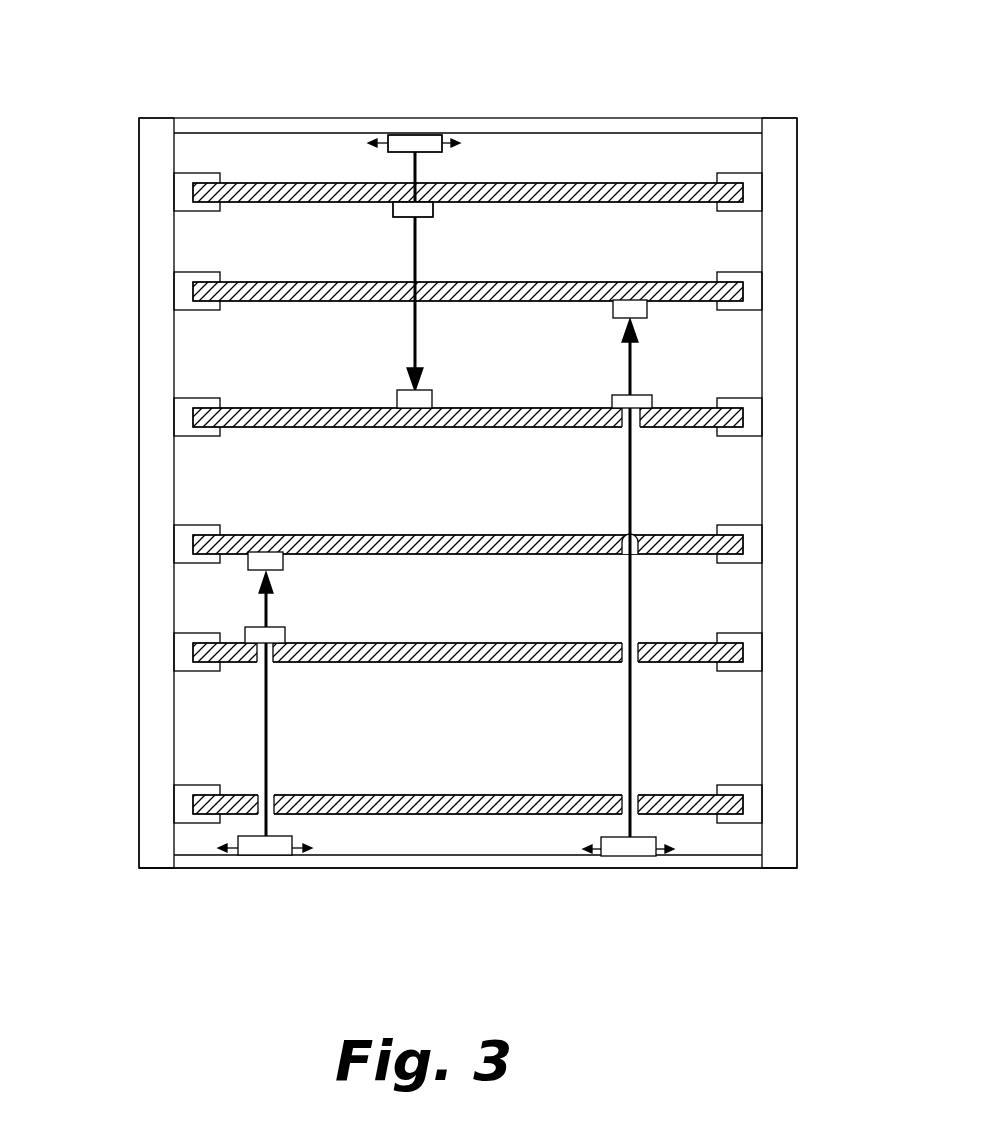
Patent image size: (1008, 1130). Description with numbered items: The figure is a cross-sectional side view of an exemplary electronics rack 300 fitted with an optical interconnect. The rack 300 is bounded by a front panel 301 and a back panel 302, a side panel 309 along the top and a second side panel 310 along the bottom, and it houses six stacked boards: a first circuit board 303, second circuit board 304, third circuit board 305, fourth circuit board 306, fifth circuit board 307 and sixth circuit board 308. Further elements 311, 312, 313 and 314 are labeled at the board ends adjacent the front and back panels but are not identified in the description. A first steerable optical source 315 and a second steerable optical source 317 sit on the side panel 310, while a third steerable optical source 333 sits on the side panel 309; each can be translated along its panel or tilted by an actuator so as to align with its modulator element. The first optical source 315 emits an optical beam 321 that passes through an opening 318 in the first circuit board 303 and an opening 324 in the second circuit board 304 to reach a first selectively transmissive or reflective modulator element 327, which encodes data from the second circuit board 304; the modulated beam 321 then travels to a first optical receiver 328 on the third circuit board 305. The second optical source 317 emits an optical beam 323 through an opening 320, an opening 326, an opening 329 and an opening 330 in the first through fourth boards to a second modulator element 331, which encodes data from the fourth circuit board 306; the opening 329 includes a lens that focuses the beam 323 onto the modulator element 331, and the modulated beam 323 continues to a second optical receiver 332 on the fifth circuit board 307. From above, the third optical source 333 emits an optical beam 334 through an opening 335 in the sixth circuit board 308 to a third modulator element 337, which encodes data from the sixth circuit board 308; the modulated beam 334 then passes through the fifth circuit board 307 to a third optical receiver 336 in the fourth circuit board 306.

The electronics rack 300 is at (102, 86).
The front panel 301 is at (165, 378).
The back panel 302 is at (793, 388).
The first circuit board 303 is at (576, 805).
The second circuit board 304 is at (383, 650).
The third circuit board 305 is at (415, 540).
The fourth circuit board 306 is at (257, 415).
The fifth circuit board 307 is at (295, 290).
The sixth circuit board 308 is at (660, 200).
The side panel 309 is at (400, 133).
The second side panel 310 is at (740, 866).
The left shelf bracket 311 is at (185, 795).
The right shelf bracket 312 is at (750, 798).
The right shelf bracket 313 is at (752, 650).
The left shelf bracket 314 is at (185, 645).
The first steerable optical source 315 is at (275, 856).
The second steerable optical source 317 is at (633, 857).
The opening 318 is at (270, 800).
The opening 320 is at (633, 805).
The optical beam 321 is at (268, 733).
The optical beam 323 is at (632, 740).
The opening 324 is at (275, 650).
The opening 326 is at (625, 645).
The first selectively transmissive or reflective modulator element 327 is at (278, 633).
The first optical receiver 328 is at (262, 558).
The opening 329 is at (625, 540).
The opening 330 is at (622, 415).
The second selectively transmissive or reflective modulator element 331 is at (620, 400).
The second optical receiver 332 is at (613, 308).
The third steerable optical source 333 is at (440, 148).
The optical beam 334 is at (413, 170).
The opening 335 is at (433, 207).
The third optical receiver 336 is at (433, 398).
The third selectively transmissive or reflective modulator element 337 is at (393, 208).